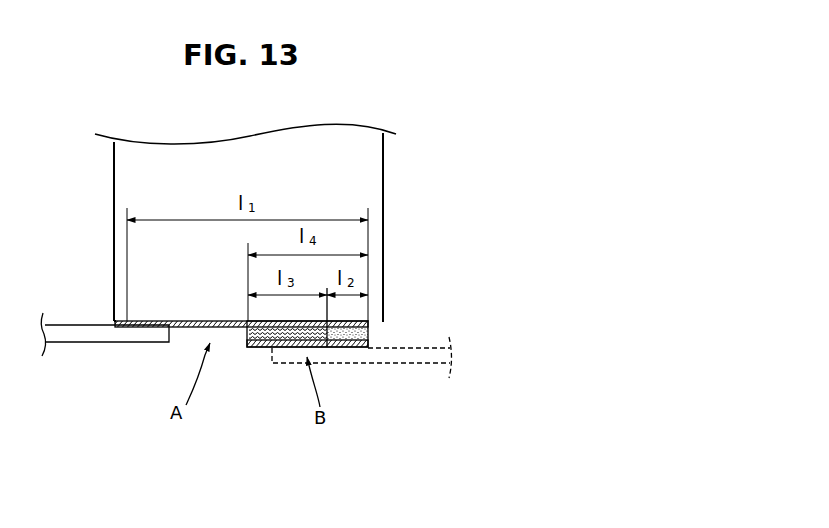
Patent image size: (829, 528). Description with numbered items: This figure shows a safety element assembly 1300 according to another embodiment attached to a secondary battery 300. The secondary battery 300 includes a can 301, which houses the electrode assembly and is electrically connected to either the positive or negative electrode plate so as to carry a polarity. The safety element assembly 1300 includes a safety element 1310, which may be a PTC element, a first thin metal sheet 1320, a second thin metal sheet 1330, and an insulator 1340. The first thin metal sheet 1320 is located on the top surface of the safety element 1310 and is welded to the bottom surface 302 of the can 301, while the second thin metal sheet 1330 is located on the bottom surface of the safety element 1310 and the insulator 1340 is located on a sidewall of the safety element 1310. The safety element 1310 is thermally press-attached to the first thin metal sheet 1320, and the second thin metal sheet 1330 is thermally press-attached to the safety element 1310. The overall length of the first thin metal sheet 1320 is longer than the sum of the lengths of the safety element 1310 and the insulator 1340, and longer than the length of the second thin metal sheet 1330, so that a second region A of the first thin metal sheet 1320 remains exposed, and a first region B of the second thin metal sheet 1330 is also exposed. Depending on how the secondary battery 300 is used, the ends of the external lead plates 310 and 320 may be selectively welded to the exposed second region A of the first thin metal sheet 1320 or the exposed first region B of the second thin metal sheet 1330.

The secondary battery 300 is at (253, 223).
The can 301 is at (114, 172).
The bottom surface 302 is at (118, 323).
The external lead plate 310 is at (105, 342).
The external lead plate 320 is at (431, 367).
The safety element assembly 1300 is at (313, 372).
The safety element 1310 is at (370, 333).
The first thin metal sheet 1320 is at (369, 323).
The second thin metal sheet 1330 is at (263, 349).
The insulator 1340 is at (247, 338).